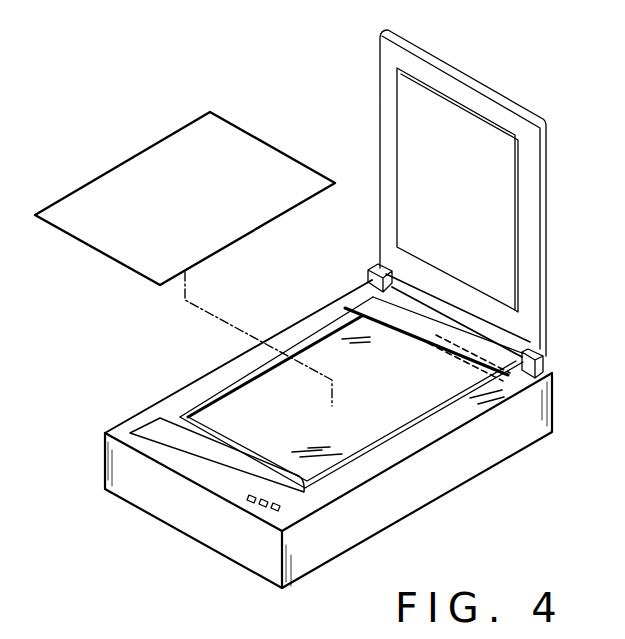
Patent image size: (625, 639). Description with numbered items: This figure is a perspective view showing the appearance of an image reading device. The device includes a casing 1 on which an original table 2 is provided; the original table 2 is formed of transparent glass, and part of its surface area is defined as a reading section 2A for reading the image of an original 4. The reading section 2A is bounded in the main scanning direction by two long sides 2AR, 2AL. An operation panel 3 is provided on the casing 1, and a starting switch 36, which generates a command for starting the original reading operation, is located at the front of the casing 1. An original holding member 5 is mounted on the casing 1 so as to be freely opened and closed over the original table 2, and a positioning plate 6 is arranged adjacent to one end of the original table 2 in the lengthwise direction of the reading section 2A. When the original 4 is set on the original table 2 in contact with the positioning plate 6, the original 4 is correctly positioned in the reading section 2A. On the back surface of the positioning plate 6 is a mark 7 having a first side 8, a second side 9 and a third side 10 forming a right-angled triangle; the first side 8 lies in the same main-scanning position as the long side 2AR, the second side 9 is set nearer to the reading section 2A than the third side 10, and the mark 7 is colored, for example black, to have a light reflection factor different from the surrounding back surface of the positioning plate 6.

The casing 1 is at (472, 462).
The original table 2 is at (327, 342).
The reading section 2A is at (252, 448).
The long side of reading section 2AL is at (235, 382).
The long side of reading section 2AR is at (376, 450).
The operation panel 3 is at (157, 430).
The original 4 is at (123, 176).
The original holding member 5 is at (481, 97).
The positioning plate 6 is at (372, 300).
The mark 7 is at (508, 330).
The first side 8 is at (478, 375).
The second side 9 is at (473, 375).
The third side 10 is at (510, 365).
The starting switch 36 is at (277, 507).